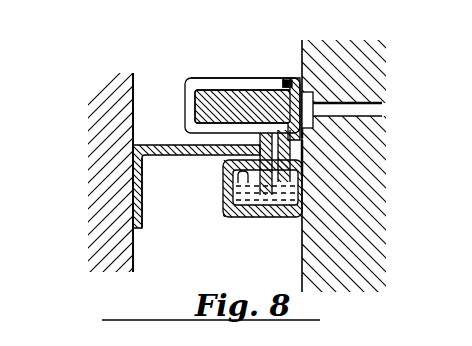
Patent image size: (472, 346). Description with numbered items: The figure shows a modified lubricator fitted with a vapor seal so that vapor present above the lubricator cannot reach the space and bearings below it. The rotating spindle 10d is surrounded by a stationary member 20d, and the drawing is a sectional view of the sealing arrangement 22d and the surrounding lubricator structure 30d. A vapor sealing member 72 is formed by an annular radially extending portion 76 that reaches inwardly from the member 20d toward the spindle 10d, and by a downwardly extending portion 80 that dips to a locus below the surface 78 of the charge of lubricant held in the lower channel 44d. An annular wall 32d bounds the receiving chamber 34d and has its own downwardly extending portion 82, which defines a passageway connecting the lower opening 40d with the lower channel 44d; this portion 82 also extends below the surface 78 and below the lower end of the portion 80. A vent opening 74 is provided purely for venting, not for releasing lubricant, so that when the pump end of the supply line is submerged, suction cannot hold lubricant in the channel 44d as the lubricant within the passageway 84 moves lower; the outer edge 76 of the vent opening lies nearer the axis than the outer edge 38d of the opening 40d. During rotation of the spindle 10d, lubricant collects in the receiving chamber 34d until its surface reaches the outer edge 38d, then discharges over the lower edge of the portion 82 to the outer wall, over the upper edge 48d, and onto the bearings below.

The spindle 10d is at (360, 242).
The member 20d is at (103, 82).
The seal assembly 22d is at (219, 211).
The passage 30d is at (365, 105).
The annular wall 32d is at (193, 82).
The receiving chamber 34d is at (210, 98).
The outer edge 38d is at (280, 126).
The lower opening 40d is at (302, 132).
The lower channel 44d is at (278, 214).
The upper edge 48d is at (222, 163).
The vapor sealing member 72 is at (139, 172).
The vent opening 74 is at (303, 82).
The annular radially extending portion 76 is at (290, 83).
The surface 78 is at (242, 213).
The downwardly extending portion 80 is at (257, 214).
The downwardly extending portion 82 is at (302, 167).
The passageway 84 is at (302, 153).